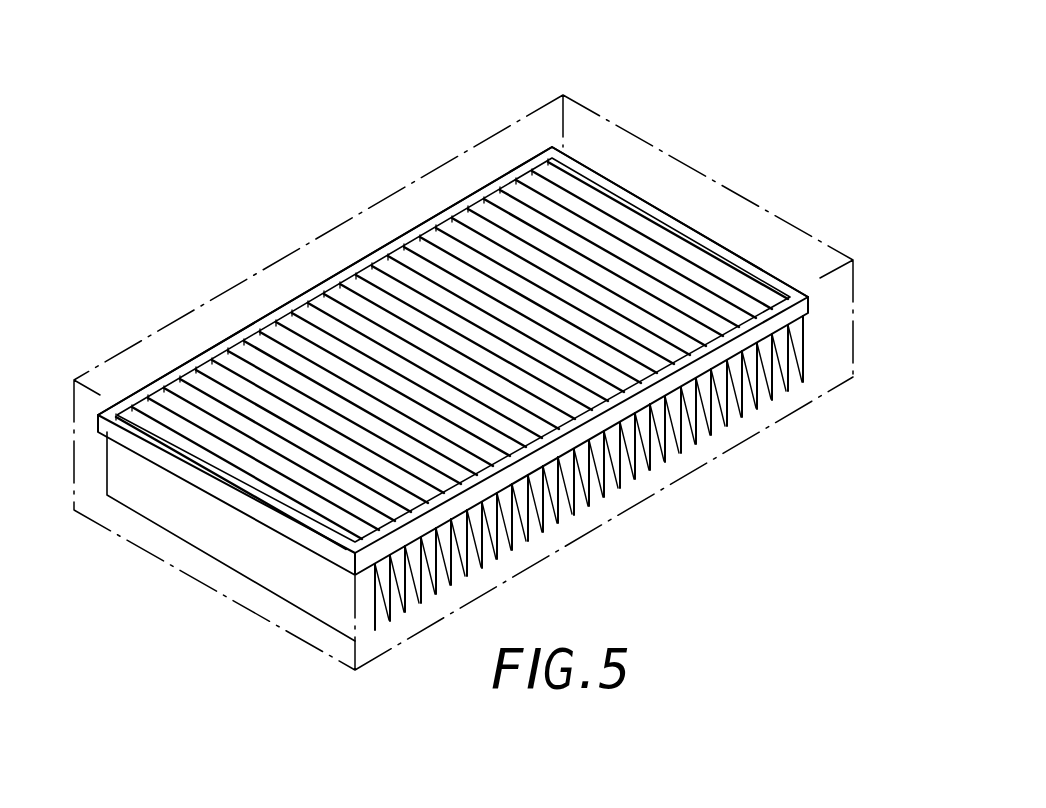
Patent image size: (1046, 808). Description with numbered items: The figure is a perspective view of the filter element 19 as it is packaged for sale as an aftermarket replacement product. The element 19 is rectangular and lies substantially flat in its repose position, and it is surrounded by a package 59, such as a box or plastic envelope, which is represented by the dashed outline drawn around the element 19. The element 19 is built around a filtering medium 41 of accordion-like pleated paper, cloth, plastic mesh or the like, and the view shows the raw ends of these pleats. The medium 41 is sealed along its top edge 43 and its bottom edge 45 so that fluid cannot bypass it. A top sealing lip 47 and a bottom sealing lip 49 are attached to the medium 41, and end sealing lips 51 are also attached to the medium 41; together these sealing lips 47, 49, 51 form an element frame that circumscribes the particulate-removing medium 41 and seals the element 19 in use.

The filter element 19 is at (642, 96).
The filtering medium 41 is at (601, 218).
The top edge 43 is at (527, 537).
The bottom edge 45 is at (260, 318).
The top sealing lip 47 is at (623, 398).
The bottom sealing lip 49 is at (455, 208).
The end sealing lips 51 is at (688, 228).
The package 59 is at (762, 437).